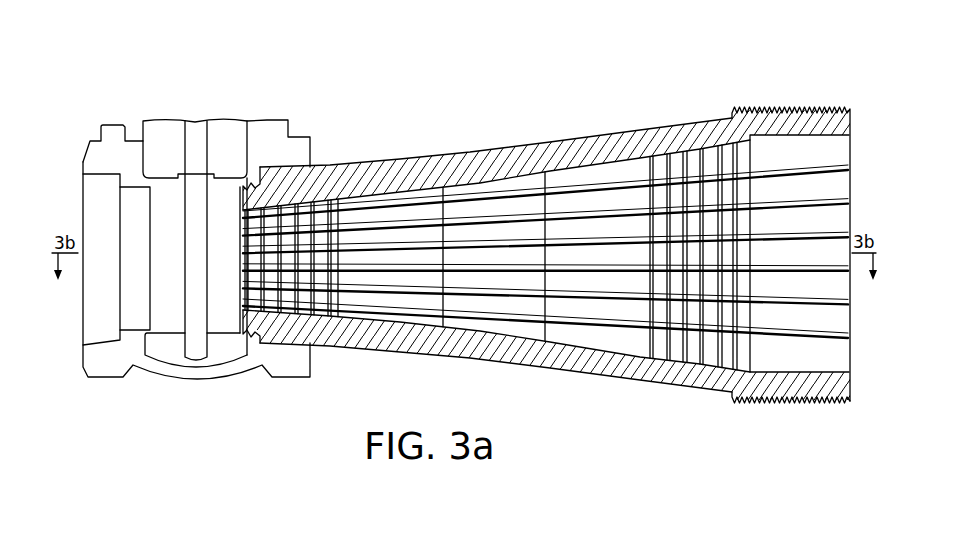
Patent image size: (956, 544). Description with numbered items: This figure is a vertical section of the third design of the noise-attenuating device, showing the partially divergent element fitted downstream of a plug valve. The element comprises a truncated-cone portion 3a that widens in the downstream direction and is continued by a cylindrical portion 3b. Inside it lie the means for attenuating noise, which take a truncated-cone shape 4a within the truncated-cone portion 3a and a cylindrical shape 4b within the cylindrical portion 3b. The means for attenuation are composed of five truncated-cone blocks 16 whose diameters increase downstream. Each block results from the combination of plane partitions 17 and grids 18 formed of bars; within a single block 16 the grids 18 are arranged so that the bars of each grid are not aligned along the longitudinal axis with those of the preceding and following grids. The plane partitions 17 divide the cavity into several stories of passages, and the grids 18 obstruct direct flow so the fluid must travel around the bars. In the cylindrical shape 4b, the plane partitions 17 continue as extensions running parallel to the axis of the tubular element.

The truncated-cone portion 3a is at (556, 147).
The means for attenuating noise of truncated-cone shape 4a is at (620, 172).
The cylindrical portion 3b is at (767, 110).
The means of cylindrical shape 4b is at (803, 148).
The truncated-cone blocks 16 is at (306, 224).
The plane partitions 17 is at (404, 308).
The grids 18 is at (650, 343).